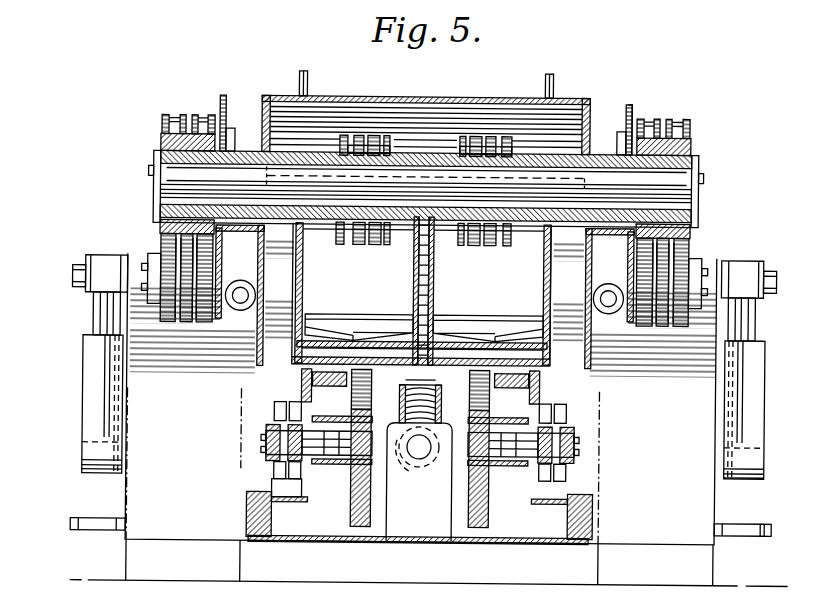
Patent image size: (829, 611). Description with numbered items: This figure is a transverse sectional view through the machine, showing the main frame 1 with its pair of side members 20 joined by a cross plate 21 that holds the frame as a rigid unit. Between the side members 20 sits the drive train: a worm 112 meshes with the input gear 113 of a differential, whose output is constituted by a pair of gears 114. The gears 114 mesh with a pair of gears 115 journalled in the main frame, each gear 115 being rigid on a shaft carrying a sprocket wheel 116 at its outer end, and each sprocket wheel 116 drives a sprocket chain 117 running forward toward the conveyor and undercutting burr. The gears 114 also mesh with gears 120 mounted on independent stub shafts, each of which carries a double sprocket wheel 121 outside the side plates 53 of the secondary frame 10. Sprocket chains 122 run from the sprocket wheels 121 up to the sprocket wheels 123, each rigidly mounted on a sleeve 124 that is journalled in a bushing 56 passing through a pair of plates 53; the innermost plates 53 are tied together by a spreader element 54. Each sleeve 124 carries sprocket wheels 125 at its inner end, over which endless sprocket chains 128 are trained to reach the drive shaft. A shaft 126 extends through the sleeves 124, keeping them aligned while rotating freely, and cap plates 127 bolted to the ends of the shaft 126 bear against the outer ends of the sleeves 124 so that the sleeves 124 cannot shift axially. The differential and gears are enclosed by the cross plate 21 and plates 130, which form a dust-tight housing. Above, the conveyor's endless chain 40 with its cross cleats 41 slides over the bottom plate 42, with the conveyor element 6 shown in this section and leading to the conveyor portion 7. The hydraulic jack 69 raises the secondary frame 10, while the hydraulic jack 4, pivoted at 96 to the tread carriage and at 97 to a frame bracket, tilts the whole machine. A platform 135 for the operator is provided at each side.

The main frame 1 is at (359, 553).
The hydraulic jack 4 is at (93, 398).
The tray 6 is at (362, 313).
The portion of the conveyor 7 is at (299, 72).
The secondary frame 10 is at (636, 109).
The side members 20 is at (265, 543).
The cross plate 21 is at (416, 546).
The endless link-type chain 40 is at (433, 281).
The cross cleats 41 is at (500, 320).
The plate 42 is at (386, 342).
The plates 53 is at (262, 97).
The spreader element 54 is at (421, 104).
The bushings 56 is at (228, 150).
The hydraulic jack 69 is at (245, 312).
The pivot 96 is at (96, 477).
The pivot 97 is at (72, 290).
The worm 112 is at (418, 470).
The input gear 113 is at (438, 410).
The gears 114 is at (342, 390).
The gears 115 is at (352, 508).
The sprocket wheel 116 is at (267, 443).
The sprocket chain 117 is at (275, 480).
The gears 120 is at (400, 400).
The sprocket wheel 121 is at (175, 324).
The sprocket chains 122 is at (163, 117).
The sprocket wheels 123 is at (159, 143).
The sleeve 124 is at (334, 236).
The sprocket wheels 125 is at (344, 136).
The shaft 126 is at (690, 206).
The cap plates 127 is at (152, 185).
The sprocket chains 128 is at (388, 138).
The plates 130 is at (310, 518).
The platform 135 is at (92, 533).